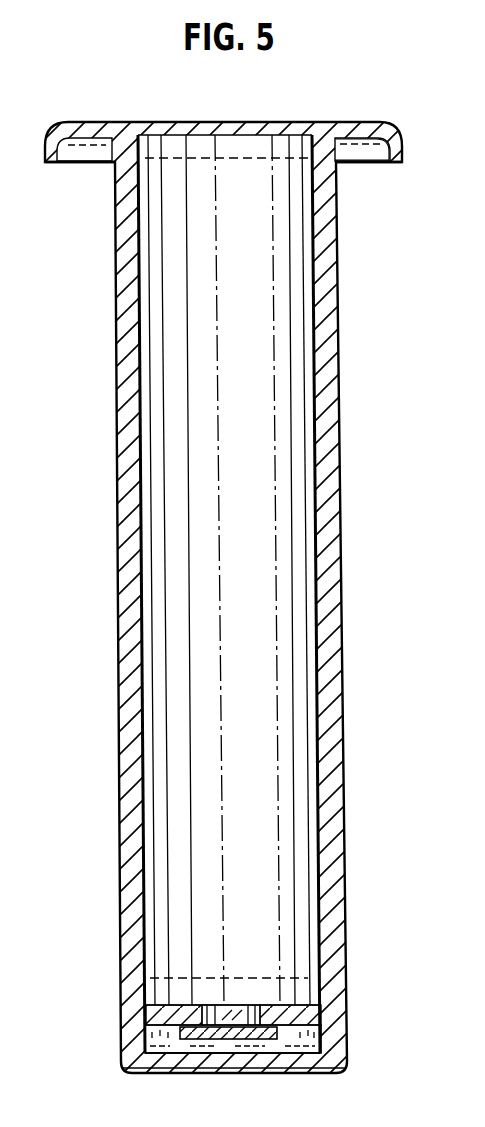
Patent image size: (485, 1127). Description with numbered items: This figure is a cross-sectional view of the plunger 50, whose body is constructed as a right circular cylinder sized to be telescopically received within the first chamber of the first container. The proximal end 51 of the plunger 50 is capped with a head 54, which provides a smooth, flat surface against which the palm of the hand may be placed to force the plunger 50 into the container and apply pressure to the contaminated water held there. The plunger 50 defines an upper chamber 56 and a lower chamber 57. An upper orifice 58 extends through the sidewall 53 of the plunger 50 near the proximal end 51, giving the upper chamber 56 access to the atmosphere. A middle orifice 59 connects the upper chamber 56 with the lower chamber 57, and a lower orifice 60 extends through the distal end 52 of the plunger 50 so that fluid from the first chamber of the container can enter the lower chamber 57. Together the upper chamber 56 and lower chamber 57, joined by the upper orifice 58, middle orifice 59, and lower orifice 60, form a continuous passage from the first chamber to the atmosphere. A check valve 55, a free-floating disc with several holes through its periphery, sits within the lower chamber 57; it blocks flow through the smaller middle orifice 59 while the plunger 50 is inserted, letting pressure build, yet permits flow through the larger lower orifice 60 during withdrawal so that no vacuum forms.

The plunger 50 is at (394, 108).
The proximal end 51 is at (131, 146).
The distal end 52 is at (305, 1072).
The sidewall 53 is at (338, 292).
The head 54 is at (213, 128).
The check valve 55 is at (255, 1023).
The upper chamber 56 is at (252, 265).
The lower chamber 57 is at (163, 1072).
The upper orifice 58 is at (334, 156).
The middle orifice 59 is at (233, 1012).
The lower orifice 60 is at (242, 1073).